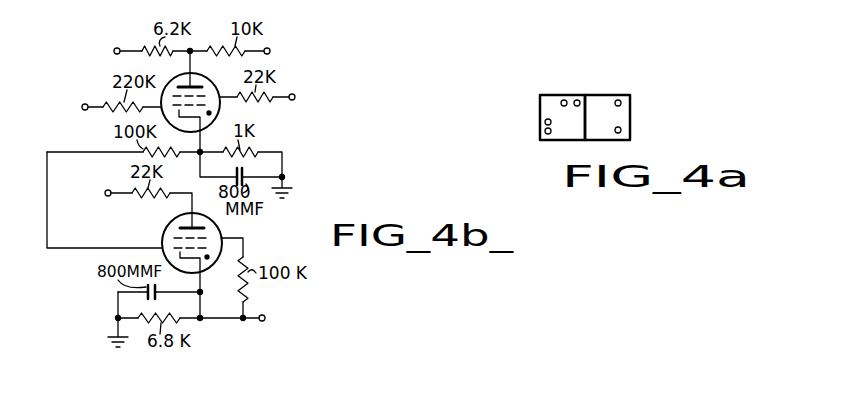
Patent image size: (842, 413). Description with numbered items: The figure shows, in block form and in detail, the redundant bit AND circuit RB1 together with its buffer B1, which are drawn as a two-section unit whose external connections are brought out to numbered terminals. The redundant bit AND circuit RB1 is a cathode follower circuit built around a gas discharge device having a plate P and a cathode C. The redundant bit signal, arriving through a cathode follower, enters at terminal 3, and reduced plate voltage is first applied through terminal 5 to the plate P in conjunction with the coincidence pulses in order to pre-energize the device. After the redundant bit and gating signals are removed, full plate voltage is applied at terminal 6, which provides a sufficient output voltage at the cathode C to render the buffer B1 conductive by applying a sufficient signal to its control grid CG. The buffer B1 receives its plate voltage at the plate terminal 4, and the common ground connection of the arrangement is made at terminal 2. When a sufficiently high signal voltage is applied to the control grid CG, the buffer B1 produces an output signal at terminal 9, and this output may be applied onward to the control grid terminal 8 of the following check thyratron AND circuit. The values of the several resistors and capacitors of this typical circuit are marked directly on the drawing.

In FIG. 4B, the ground terminal 2 is at (284, 177).
In FIG. 4B, the input terminal 3 is at (83, 104).
In FIG. 4A, the input terminal 3 is at (545, 132).
In FIG. 4B, the plate terminal 4 is at (105, 193).
In FIG. 4A, the plate terminal 4 is at (621, 103).
In FIG. 4B, the reduced plate voltage terminal 5 is at (114, 51).
In FIG. 4A, the reduced plate voltage terminal 5 is at (564, 100).
In FIG. 4B, the full plate voltage terminal 6 is at (263, 51).
In FIG. 4A, the full plate voltage terminal 6 is at (577, 100).
In FIG. 4B, the control grid terminal 8 is at (294, 95).
In FIG. 4A, the control grid terminal 8 is at (545, 122).
In FIG. 4B, the output terminal 9 is at (265, 318).
In FIG. 4A, the output terminal 9 is at (621, 130).
In FIG. 4B, the plate P is at (196, 86).
In FIG. 4B, the cathode C is at (183, 113).
In FIG. 4B, the control grid CG is at (173, 244).
In FIG. 4B, the redundant bit AND circuit RB1 is at (135, 101).
In FIG. 4A, the redundant bit AND circuit RB1 is at (562, 117).
In FIG. 4B, the buffer B1 is at (145, 235).
In FIG. 4A, the buffer B1 is at (607, 117).